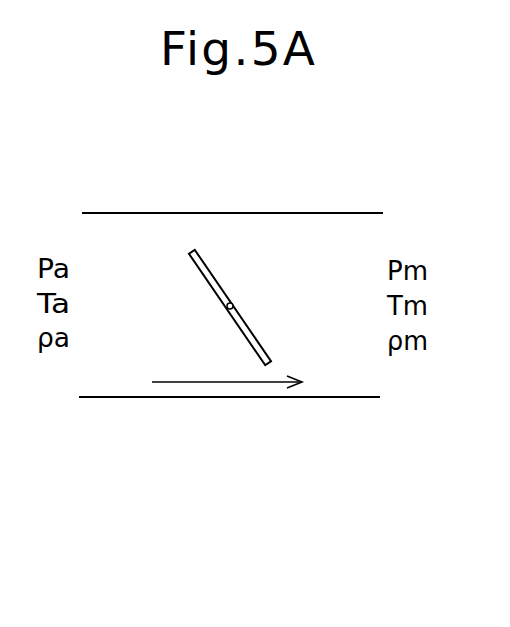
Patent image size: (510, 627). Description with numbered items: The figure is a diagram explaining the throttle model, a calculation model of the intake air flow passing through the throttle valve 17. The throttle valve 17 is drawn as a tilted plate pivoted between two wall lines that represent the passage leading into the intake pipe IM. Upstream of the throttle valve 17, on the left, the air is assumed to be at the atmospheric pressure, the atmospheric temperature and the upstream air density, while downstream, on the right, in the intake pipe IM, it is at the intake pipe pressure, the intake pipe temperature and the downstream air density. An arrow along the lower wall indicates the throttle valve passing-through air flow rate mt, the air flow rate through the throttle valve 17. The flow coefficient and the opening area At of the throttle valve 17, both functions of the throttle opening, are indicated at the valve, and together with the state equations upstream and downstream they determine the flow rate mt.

The throttle valve 17 is at (205, 262).
The opening area At is at (246, 240).
The intake pipe IM is at (345, 399).
The throttle valve passing-through air flow rate mt is at (193, 380).